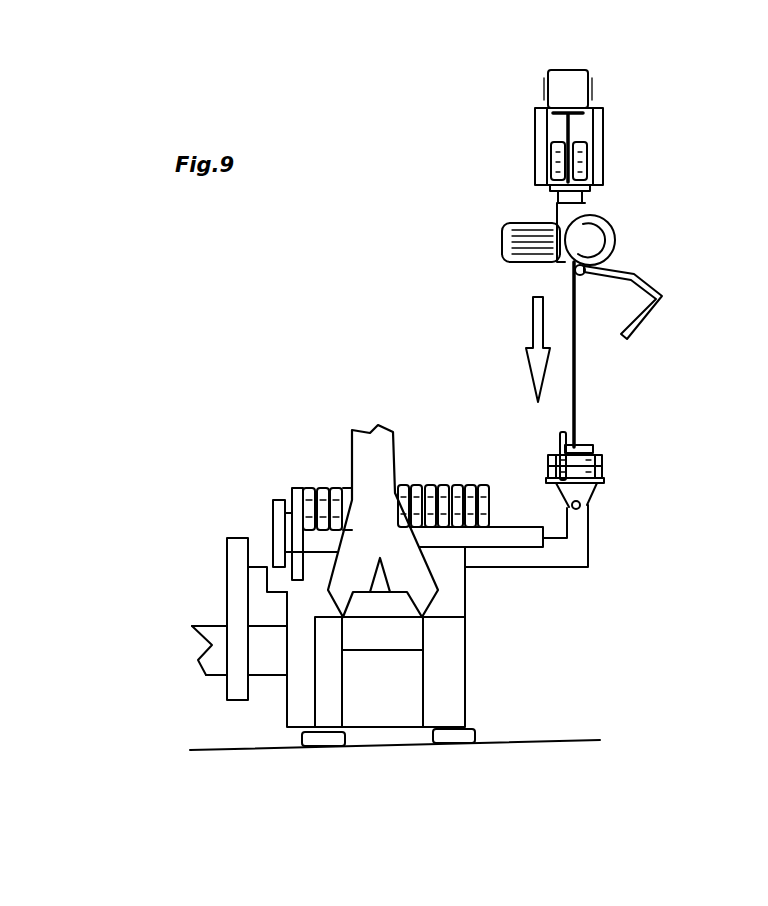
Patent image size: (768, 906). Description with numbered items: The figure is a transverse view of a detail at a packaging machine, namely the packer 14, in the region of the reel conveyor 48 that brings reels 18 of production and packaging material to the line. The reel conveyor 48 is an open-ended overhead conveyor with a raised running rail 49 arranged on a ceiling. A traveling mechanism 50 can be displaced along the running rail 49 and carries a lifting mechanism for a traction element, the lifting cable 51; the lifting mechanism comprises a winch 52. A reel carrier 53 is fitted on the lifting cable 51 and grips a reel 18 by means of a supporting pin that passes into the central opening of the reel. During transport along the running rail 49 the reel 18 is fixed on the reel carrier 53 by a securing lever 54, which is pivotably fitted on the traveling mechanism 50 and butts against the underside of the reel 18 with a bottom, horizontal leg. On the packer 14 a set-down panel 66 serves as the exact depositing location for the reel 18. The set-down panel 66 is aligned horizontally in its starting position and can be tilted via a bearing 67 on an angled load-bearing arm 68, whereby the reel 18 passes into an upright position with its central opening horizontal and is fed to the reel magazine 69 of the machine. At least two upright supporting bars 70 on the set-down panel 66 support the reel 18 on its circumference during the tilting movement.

The packer 14 is at (172, 722).
The reels 18 is at (313, 490).
The reel conveyor 48 is at (384, 304).
The running rail 49 is at (603, 128).
The traveling mechanism 50 is at (504, 188).
The lifting cable 51 is at (573, 355).
The winch 52 is at (593, 240).
The reel carrier 53 is at (593, 445).
The securing lever 54 is at (653, 287).
The set-down panel 66 is at (602, 483).
The bearing 67 is at (572, 508).
The load-bearing arm 68 is at (543, 563).
The reel magazine 69 is at (450, 460).
The supporting bars 70 is at (577, 430).